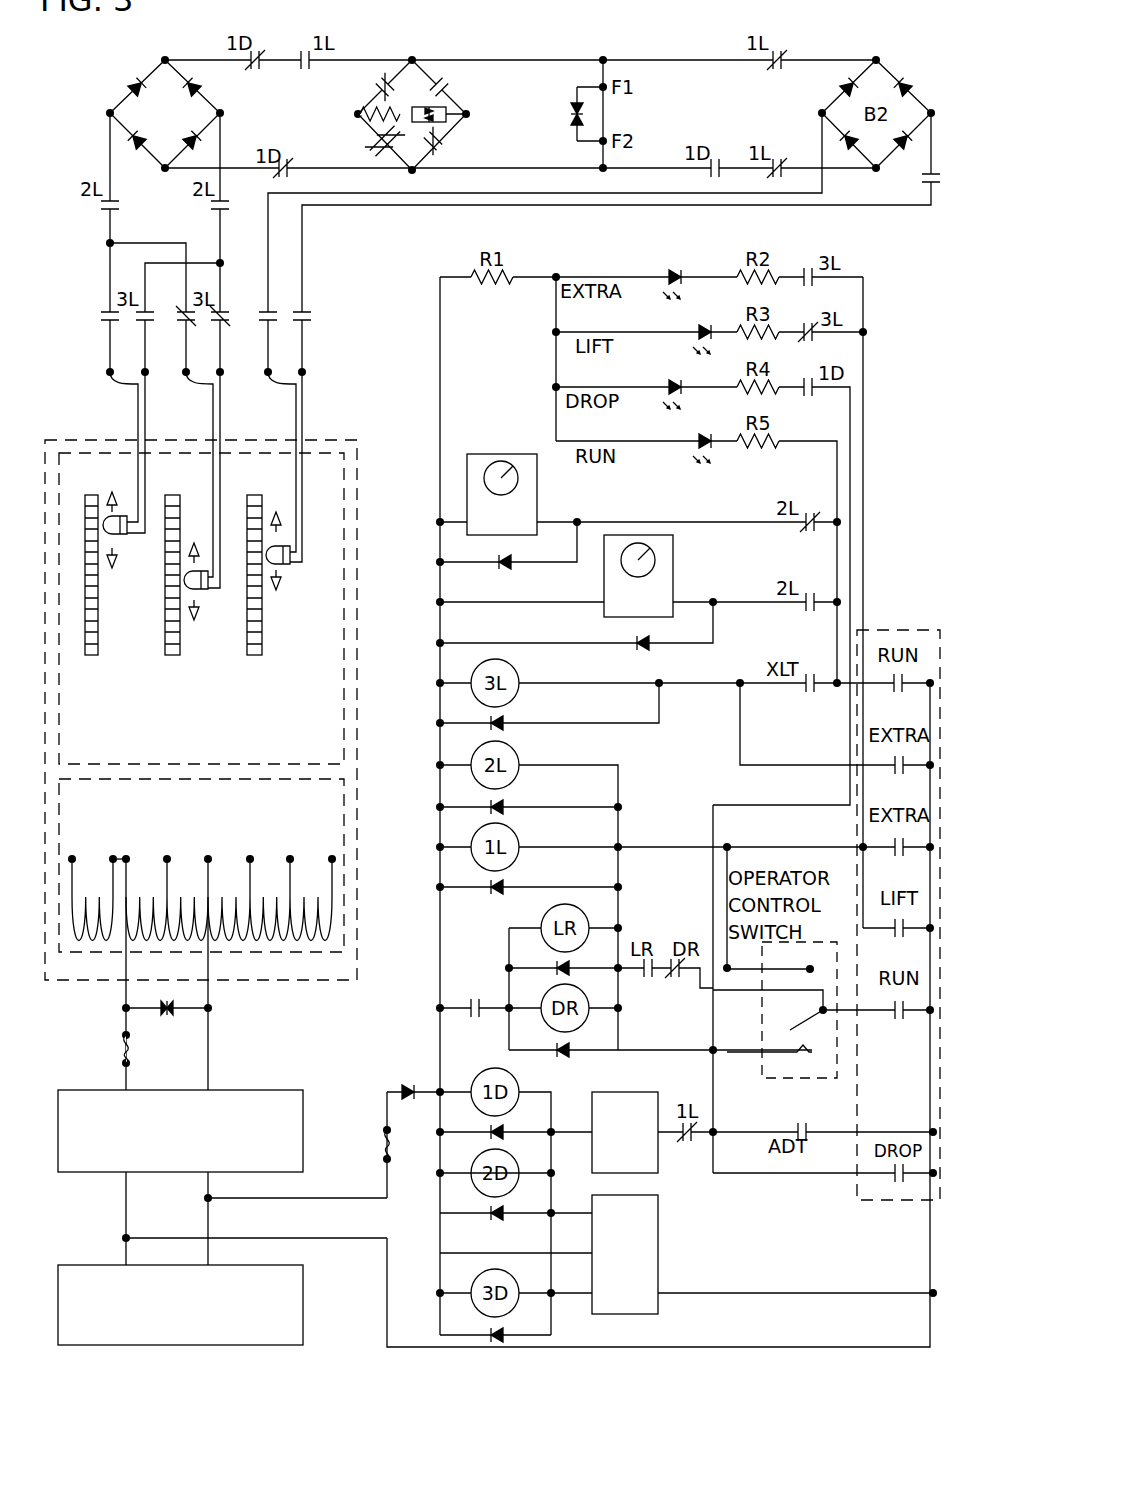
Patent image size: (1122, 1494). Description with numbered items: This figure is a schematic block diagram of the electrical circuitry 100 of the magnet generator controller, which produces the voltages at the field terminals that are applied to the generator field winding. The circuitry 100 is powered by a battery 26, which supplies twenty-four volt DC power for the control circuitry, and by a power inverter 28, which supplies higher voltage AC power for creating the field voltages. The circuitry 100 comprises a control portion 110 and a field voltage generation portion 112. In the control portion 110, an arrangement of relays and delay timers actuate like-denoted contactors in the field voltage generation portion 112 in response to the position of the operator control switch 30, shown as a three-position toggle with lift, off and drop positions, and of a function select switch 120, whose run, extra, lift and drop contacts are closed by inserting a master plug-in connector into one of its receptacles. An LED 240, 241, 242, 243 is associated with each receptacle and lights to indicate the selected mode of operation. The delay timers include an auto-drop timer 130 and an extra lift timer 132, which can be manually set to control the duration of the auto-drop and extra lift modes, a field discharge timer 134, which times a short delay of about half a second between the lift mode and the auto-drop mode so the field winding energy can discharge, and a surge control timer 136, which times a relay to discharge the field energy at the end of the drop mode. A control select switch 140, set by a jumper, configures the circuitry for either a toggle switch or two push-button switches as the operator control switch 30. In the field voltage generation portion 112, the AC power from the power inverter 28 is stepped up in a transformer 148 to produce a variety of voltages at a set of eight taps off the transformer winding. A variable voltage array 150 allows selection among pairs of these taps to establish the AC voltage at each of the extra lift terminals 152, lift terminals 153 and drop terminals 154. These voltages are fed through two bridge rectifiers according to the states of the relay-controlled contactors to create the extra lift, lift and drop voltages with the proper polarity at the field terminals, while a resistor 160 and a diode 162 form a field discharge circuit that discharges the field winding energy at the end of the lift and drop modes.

The electrical circuitry 100 is at (67, 94).
The control portion 110 is at (409, 317).
The field voltage generation portion 112 is at (365, 340).
The function select switch 120 is at (857, 1194).
The auto-drop timer 130 is at (537, 494).
The extra lift timer 132 is at (673, 567).
The field discharge timer 134 is at (658, 1173).
The surge control timer 136 is at (658, 1250).
The control select switch 140 is at (445, 1016).
The transformer 148 is at (357, 793).
The variable voltage array 150 is at (357, 736).
The extra lift terminals 152 is at (103, 371).
The lift terminals 153 is at (180, 371).
The drop terminals 154 is at (262, 371).
The resistor 160 is at (378, 104).
The diode 162 is at (440, 106).
The LED 240 is at (706, 431).
The LED 241 is at (672, 377).
The LED 242 is at (706, 322).
The LED 243 is at (672, 268).
The battery 26 is at (92, 1263).
The power inverter 28 is at (92, 1089).
The operator control switch 30 is at (766, 1078).